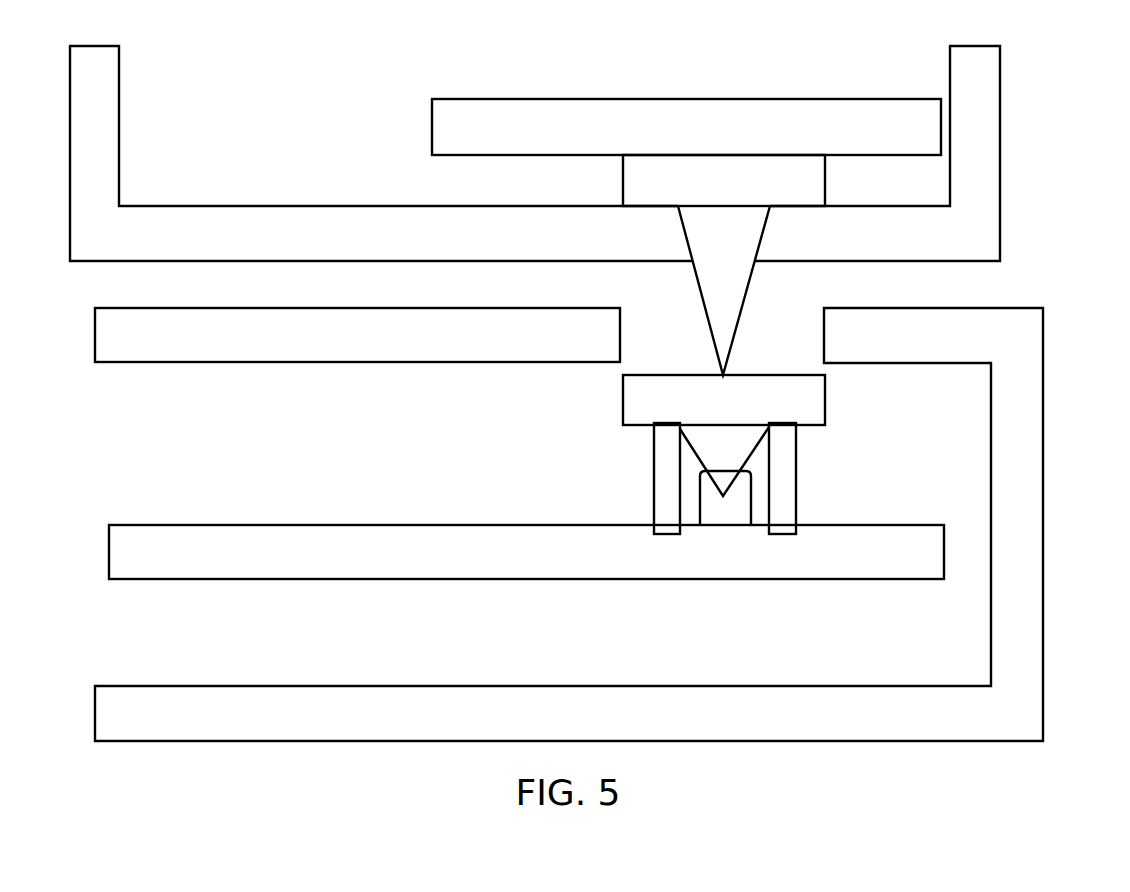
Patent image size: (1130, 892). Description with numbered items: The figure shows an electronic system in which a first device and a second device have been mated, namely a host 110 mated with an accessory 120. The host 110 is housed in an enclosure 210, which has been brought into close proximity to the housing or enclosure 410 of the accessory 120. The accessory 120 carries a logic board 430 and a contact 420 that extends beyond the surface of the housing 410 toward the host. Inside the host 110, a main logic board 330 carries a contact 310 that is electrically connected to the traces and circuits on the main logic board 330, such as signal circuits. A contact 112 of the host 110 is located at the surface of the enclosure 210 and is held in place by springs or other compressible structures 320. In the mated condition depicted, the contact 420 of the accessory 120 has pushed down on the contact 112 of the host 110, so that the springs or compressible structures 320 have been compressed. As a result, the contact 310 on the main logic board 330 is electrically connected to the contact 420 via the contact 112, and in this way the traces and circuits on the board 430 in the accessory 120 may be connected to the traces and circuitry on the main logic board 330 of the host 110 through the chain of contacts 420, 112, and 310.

The host device 110 is at (600, 541).
The contact 112 is at (640, 398).
The accessory 120 is at (578, 208).
The enclosure 210 is at (249, 338).
The contact 310 is at (706, 495).
The springs or compressible structures 320 is at (671, 449).
The main logic board 330 is at (402, 548).
The housing 410 is at (200, 218).
The contact 420 is at (731, 308).
The logic board 430 is at (527, 113).